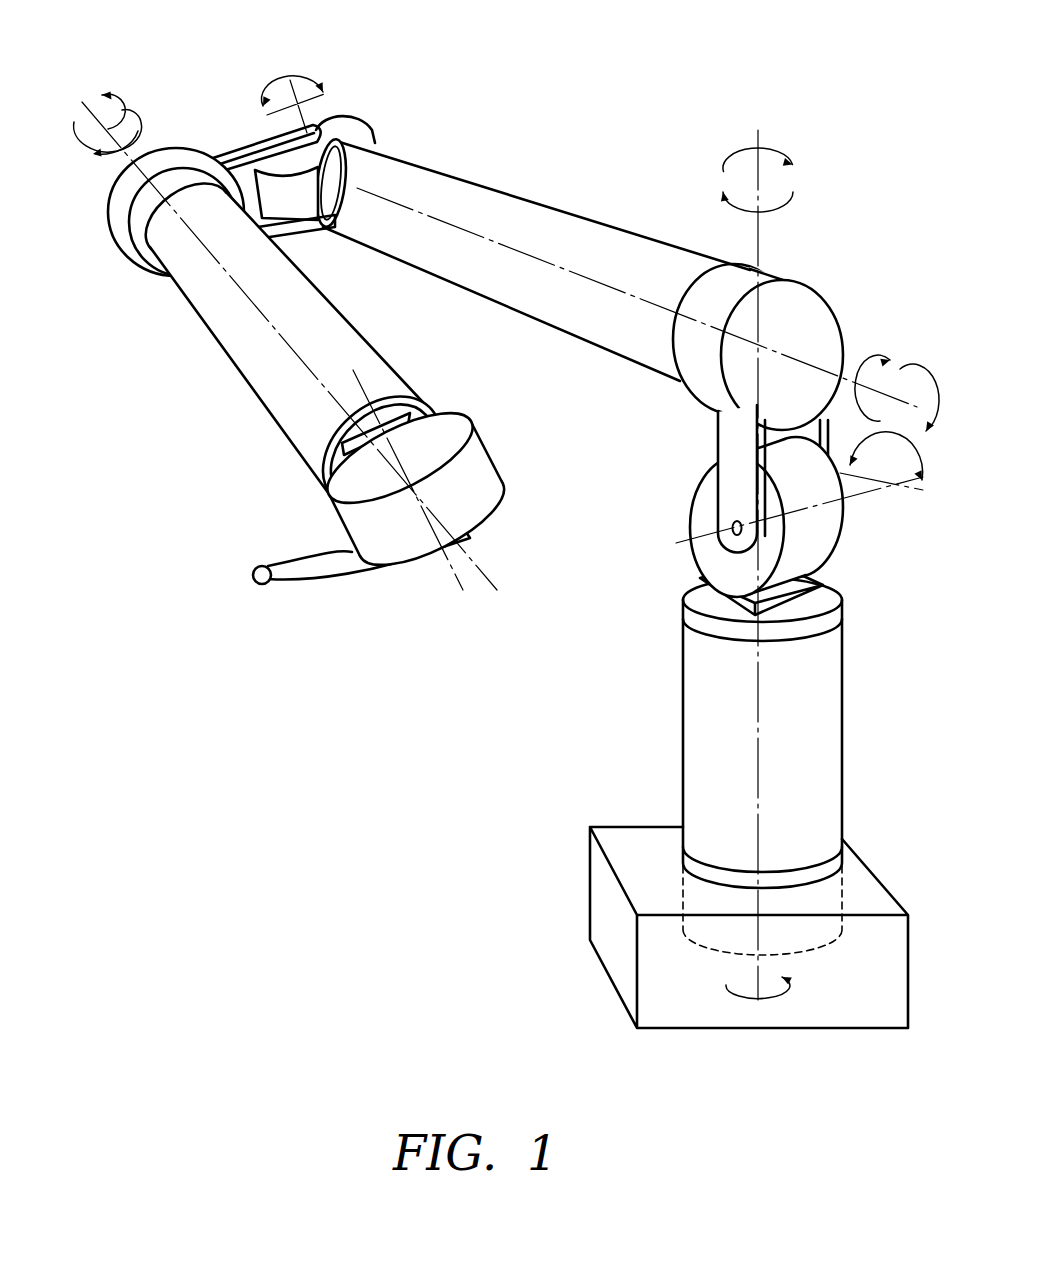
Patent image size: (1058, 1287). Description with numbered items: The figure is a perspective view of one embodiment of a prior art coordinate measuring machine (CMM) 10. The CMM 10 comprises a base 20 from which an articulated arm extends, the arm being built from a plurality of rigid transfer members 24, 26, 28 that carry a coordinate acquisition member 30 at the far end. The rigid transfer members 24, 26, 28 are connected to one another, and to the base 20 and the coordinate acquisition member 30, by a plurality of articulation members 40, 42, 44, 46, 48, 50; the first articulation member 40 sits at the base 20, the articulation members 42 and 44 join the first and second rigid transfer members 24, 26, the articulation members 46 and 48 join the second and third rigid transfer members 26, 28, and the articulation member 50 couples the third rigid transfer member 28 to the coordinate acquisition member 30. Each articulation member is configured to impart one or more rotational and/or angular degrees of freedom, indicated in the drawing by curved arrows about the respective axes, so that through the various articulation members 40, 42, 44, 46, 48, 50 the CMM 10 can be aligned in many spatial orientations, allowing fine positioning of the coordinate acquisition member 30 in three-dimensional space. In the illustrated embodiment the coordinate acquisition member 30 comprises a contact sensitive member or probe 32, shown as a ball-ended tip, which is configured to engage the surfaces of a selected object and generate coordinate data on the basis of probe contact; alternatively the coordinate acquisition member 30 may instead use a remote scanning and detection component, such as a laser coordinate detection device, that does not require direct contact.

The coordinate measuring machine 10 is at (506, 514).
The base 20 is at (607, 885).
The rigid transfer member 24 is at (818, 688).
The rigid transfer member 26 is at (403, 178).
The rigid transfer member 28 is at (230, 323).
The coordinate acquisition member 30 is at (333, 580).
The probe 32 is at (262, 585).
The articulation member 40 is at (820, 903).
The articulation member 42 is at (817, 535).
The articulation member 44 is at (767, 281).
The articulation member 46 is at (340, 130).
The articulation member 48 is at (122, 231).
The articulation member 50 is at (478, 468).